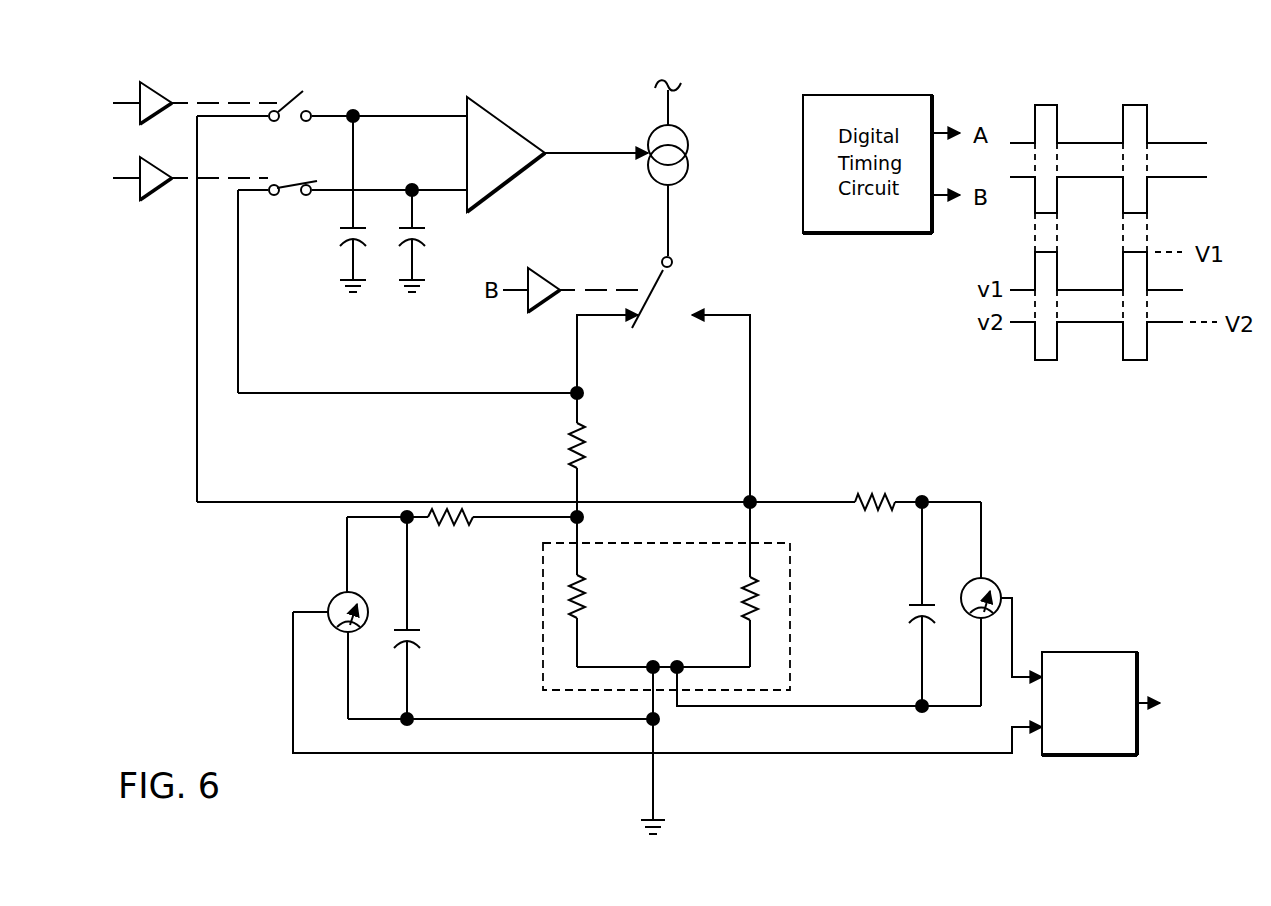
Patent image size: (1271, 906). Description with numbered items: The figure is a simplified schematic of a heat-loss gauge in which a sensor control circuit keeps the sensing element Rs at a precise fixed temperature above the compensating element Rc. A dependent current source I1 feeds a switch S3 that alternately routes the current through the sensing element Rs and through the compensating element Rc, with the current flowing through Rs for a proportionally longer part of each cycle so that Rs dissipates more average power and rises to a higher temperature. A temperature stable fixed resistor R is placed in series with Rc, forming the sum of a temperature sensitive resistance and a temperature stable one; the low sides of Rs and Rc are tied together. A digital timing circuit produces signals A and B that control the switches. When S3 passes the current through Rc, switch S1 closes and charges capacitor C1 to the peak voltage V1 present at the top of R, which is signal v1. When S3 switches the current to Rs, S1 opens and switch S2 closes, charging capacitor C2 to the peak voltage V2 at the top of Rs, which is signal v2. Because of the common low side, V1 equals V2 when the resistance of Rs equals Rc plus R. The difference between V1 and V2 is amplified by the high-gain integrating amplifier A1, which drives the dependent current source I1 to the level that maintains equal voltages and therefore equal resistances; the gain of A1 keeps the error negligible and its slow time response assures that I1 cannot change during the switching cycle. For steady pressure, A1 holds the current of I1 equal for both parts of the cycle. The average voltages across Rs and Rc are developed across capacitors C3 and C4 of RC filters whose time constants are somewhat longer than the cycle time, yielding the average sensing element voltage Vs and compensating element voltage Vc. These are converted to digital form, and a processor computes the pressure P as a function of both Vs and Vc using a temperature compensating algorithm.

The timing signal A is at (182, 178).
The timing signal B is at (186, 103).
The switch S1 is at (277, 203).
The switch S2 is at (254, 123).
The switch S3 is at (671, 289).
The peak voltage V1 is at (400, 179).
The peak voltage V2 is at (367, 105).
The capacitor C1 is at (430, 241).
The capacitor C2 is at (336, 204).
The capacitor C3 is at (906, 607).
The capacitor C4 is at (425, 618).
The high-gain integrating amplifier A1 is at (557, 154).
The dependent current source I1 is at (684, 150).
The signal v1 is at (594, 392).
The signal v2 is at (765, 490).
The temperature stable differential resistance R is at (588, 455).
The compensating element Rc is at (592, 592).
The sensing element Rs is at (731, 584).
The average compensating element voltage Vc is at (328, 618).
The average sensing element voltage Vs is at (1001, 604).
The pressure P is at (1108, 717).